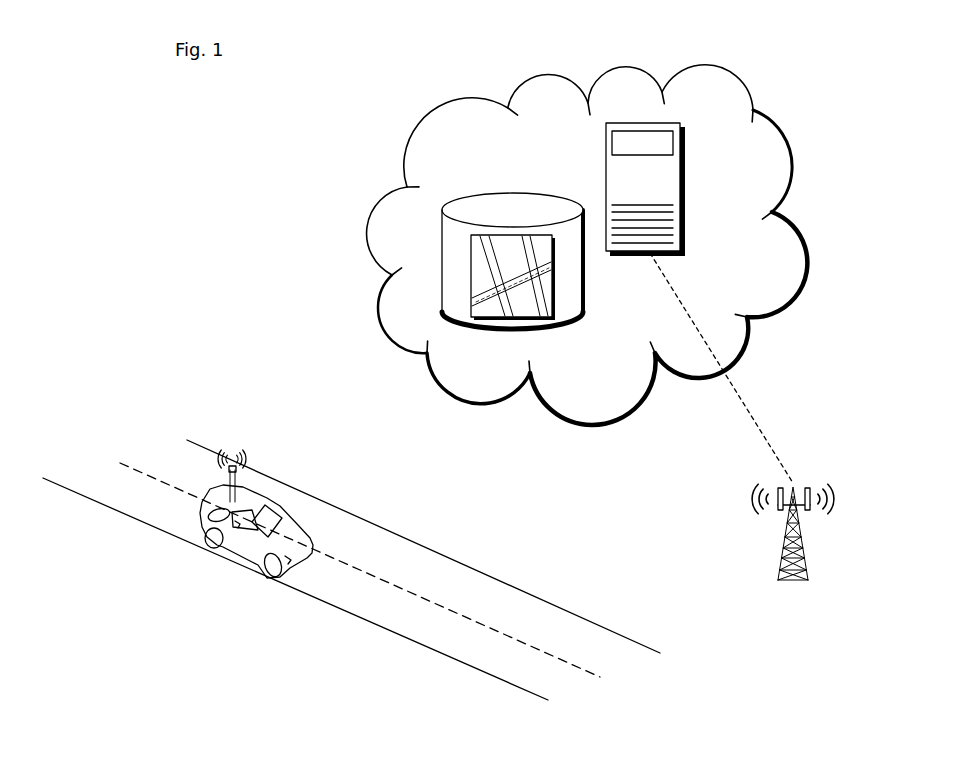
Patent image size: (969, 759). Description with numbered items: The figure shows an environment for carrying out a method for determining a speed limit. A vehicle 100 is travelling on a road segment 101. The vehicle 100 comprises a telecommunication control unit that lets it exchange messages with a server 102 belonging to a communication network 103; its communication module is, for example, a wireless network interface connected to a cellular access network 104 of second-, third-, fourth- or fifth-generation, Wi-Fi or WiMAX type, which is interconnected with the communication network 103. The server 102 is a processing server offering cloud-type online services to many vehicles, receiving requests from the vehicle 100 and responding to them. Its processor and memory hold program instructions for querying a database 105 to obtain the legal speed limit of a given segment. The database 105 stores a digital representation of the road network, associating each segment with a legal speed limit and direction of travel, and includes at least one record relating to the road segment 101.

The vehicle 100 is at (242, 550).
The road segment 101 is at (320, 600).
The server 102 is at (687, 170).
The communication network 103 is at (767, 280).
The cellular access network 104 is at (781, 541).
The database 105 is at (587, 258).